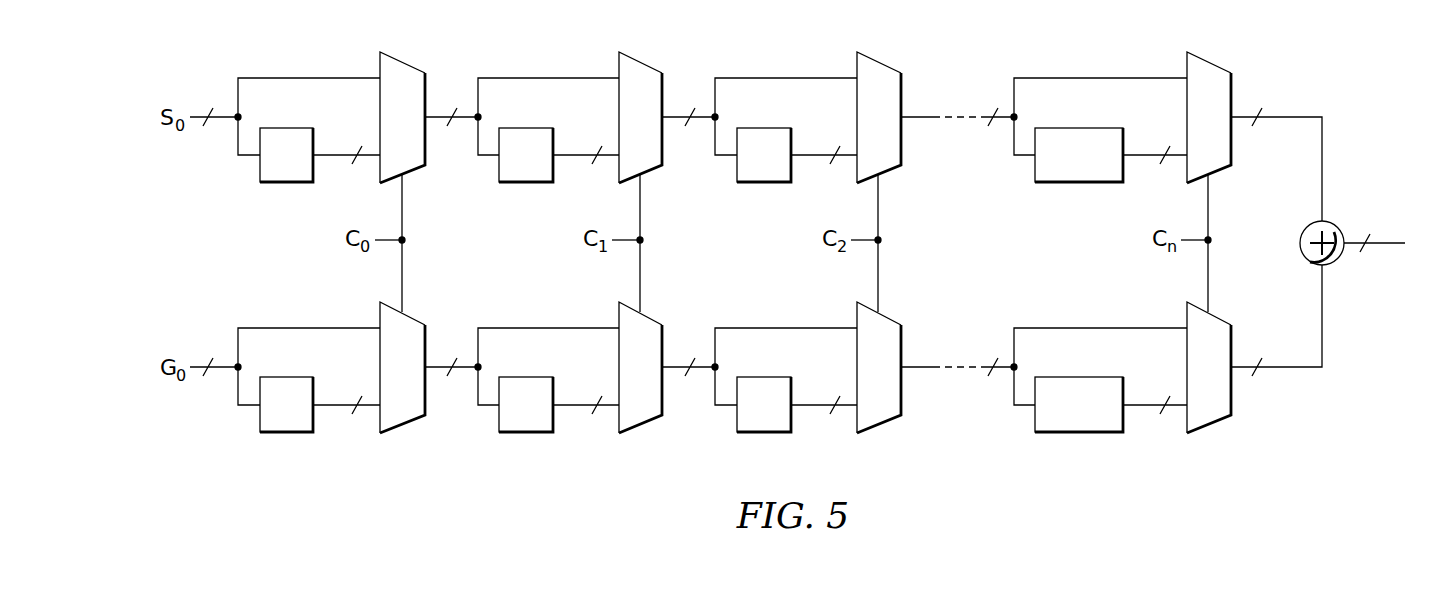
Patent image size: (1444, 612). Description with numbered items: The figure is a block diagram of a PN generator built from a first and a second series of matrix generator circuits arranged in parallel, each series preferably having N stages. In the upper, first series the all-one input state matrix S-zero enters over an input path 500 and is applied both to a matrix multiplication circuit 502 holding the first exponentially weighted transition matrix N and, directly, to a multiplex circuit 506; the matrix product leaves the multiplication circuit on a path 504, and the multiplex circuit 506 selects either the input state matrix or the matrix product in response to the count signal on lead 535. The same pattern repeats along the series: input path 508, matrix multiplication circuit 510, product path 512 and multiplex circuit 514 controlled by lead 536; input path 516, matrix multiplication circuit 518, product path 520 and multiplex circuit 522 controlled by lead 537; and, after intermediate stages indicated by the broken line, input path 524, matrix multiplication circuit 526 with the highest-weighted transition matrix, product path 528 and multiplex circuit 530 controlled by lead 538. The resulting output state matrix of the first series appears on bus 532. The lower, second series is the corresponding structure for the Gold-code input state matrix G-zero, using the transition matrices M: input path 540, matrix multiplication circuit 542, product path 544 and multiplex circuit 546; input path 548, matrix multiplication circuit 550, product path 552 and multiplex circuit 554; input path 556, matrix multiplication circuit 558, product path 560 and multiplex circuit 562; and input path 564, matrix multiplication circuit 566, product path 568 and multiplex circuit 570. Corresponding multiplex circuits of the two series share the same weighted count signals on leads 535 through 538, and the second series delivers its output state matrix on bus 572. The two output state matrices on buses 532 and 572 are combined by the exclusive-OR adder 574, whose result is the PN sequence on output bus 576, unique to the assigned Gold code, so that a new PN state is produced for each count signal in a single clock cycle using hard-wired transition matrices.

The feedback signal path 500 is at (309, 78).
The matrix multiplication circuit 502 is at (287, 182).
The transformed signal path 504 is at (330, 157).
The multiplex circuit 506 is at (403, 62).
The feedback signal path 508 is at (548, 78).
The N^2 transform block 510 is at (526, 182).
The transformed signal path 512 is at (569, 157).
The multiplexer 514 is at (642, 62).
The feedback signal path 516 is at (782, 78).
The N^4 transform block 518 is at (764, 182).
The transformed signal path 520 is at (806, 157).
The multiplexer 522 is at (880, 62).
The feedback signal path 524 is at (1095, 78).
The N^(2^(n-1)) transform block 526 is at (1078, 182).
The transformed signal path 528 is at (1136, 157).
The multiplexer 530 is at (1212, 62).
The output bus 532 is at (1290, 117).
The lead 535 is at (403, 187).
The lead 536 is at (642, 187).
The lead 537 is at (880, 187).
The lead 538 is at (1210, 187).
The feedback signal path 540 is at (309, 328).
The M^1 transform block 542 is at (286, 432).
The transformed signal path 544 is at (330, 407).
The multiplexer 546 is at (403, 425).
The feedback signal path 548 is at (548, 328).
The M^2 transform block 550 is at (525, 432).
The transformed signal path 552 is at (568, 407).
The multiplexer 554 is at (641, 425).
The feedback signal path 556 is at (781, 328).
The M^4 transform block 558 is at (764, 432).
The transformed signal path 560 is at (806, 407).
The multiplexer 562 is at (879, 425).
The feedback signal path 564 is at (1095, 328).
The M^(2^(n-1)) transform block 566 is at (1077, 432).
The transformed signal path 568 is at (1136, 407).
The multiplexer 570 is at (1210, 425).
The output bus 572 is at (1280, 367).
The modulo-2 adder 574 is at (1300, 244).
The XOR circuit / PN sequence bus 576 is at (1378, 246).